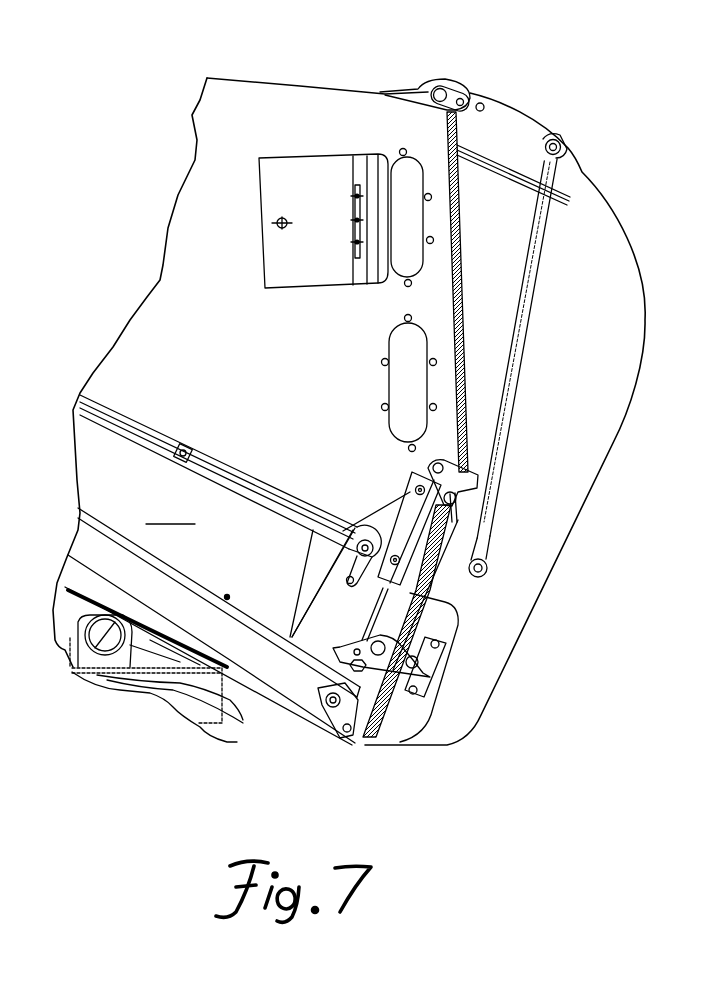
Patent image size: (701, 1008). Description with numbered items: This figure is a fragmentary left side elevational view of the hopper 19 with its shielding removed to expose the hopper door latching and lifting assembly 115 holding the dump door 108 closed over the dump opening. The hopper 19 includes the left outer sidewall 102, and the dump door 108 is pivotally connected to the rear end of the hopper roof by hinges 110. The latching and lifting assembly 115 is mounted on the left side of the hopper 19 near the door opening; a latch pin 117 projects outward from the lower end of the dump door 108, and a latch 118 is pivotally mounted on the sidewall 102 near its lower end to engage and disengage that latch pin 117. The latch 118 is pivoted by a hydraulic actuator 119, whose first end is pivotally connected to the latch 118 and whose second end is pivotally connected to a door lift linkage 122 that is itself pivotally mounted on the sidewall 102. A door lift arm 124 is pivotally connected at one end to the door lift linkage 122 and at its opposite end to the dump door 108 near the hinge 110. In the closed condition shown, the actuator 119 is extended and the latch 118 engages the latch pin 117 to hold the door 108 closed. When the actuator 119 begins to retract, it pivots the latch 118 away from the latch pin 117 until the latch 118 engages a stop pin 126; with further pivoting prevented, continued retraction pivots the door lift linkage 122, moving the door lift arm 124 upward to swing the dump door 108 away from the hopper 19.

The hopper 19 is at (203, 115).
The left outer sidewall 102 is at (237, 570).
The dump door 108 is at (620, 257).
The hinge 110 is at (450, 87).
The hopper door latching and lifting assembly 115 is at (512, 575).
The latch pin 117 is at (413, 665).
The latch 118 is at (330, 658).
The hydraulic actuator 119 is at (410, 490).
The door lift linkage 122 is at (467, 507).
The door lift arm 124 is at (528, 325).
The stop pin 126 is at (378, 740).